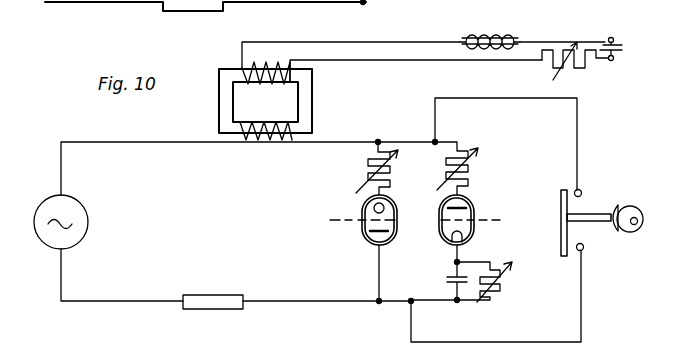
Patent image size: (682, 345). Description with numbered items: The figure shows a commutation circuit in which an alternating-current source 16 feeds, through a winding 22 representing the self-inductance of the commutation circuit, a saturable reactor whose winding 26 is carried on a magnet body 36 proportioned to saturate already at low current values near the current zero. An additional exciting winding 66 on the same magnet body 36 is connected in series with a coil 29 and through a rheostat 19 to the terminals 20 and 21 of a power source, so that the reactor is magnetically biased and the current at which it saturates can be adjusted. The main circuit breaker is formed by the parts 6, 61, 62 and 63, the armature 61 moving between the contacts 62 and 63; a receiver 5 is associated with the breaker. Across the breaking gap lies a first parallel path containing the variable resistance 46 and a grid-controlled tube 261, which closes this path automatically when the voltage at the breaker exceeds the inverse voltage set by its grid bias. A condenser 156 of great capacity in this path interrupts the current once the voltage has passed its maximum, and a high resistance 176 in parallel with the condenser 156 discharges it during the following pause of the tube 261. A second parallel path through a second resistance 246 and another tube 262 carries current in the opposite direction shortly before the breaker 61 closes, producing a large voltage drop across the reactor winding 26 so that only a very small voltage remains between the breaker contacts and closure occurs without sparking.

The earphone / receiver 5 is at (636, 230).
The circuit breaker part 6 is at (598, 228).
The alternating-current source 16 is at (84, 213).
The rheostat 19 is at (578, 68).
The terminal 20 is at (614, 60).
The terminal 21 is at (614, 36).
The winding 22 is at (220, 302).
The winding of the saturable reactor 26 is at (274, 142).
The inductance coil 29 is at (490, 32).
The magnet body 36 is at (222, 104).
The parallel-connected resistor 46 is at (472, 166).
The main circuit breaker 61 is at (561, 222).
The circuit breaker part 62 is at (581, 189).
The circuit breaker part 63 is at (583, 250).
The exciting winding 66 is at (290, 84).
The condenser 156 is at (452, 285).
The resistance 176 is at (492, 292).
The second resistance 246 is at (368, 166).
The grid-controlled tube 261 is at (476, 215).
The tube 262 is at (362, 229).